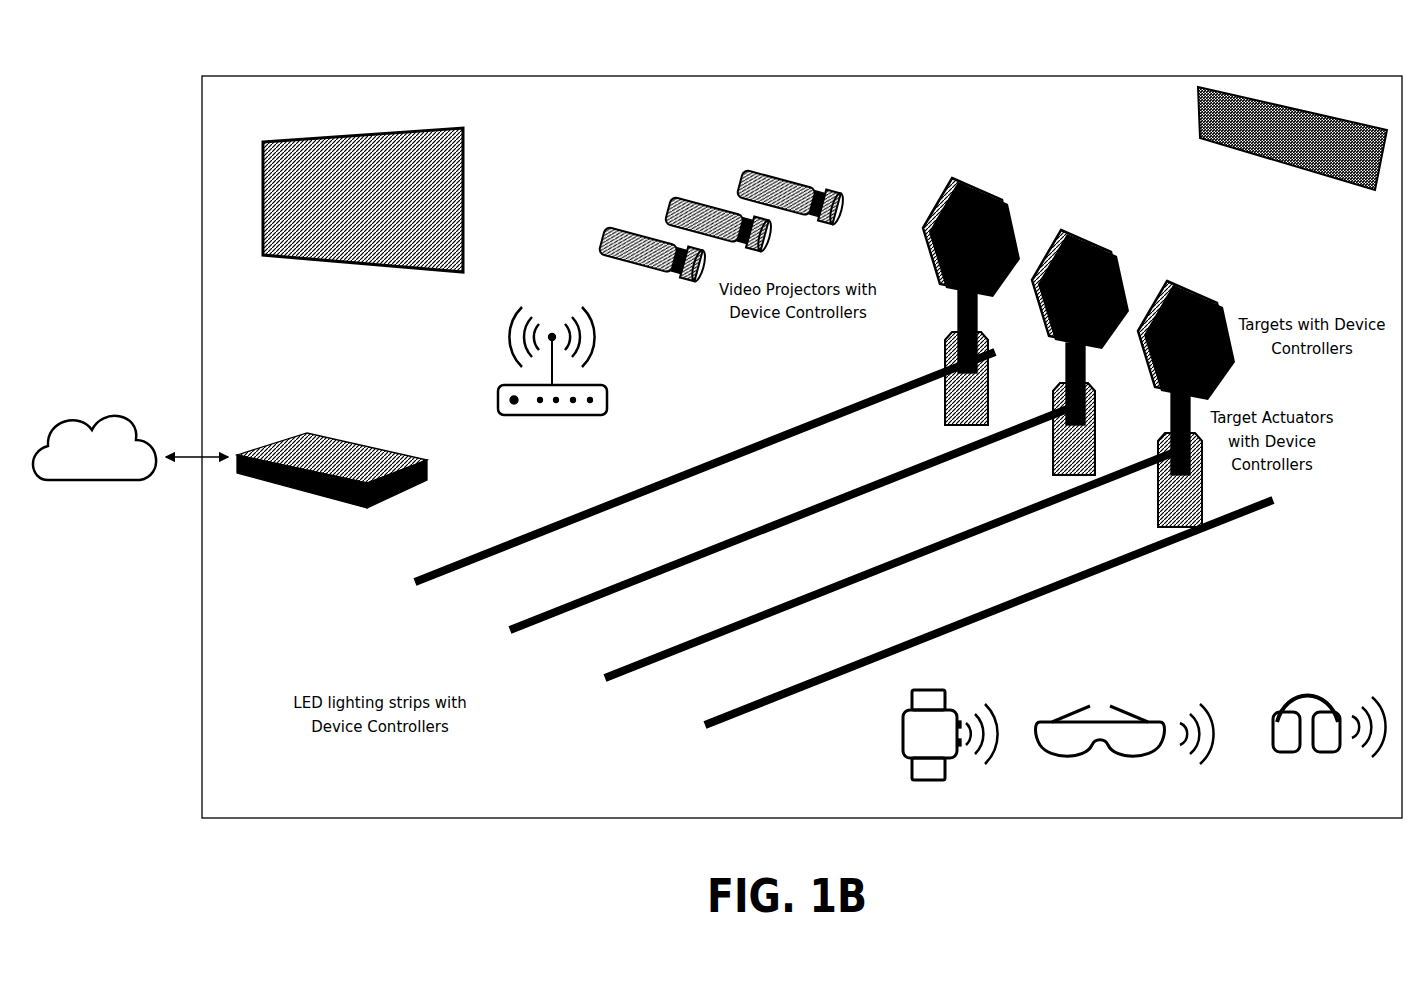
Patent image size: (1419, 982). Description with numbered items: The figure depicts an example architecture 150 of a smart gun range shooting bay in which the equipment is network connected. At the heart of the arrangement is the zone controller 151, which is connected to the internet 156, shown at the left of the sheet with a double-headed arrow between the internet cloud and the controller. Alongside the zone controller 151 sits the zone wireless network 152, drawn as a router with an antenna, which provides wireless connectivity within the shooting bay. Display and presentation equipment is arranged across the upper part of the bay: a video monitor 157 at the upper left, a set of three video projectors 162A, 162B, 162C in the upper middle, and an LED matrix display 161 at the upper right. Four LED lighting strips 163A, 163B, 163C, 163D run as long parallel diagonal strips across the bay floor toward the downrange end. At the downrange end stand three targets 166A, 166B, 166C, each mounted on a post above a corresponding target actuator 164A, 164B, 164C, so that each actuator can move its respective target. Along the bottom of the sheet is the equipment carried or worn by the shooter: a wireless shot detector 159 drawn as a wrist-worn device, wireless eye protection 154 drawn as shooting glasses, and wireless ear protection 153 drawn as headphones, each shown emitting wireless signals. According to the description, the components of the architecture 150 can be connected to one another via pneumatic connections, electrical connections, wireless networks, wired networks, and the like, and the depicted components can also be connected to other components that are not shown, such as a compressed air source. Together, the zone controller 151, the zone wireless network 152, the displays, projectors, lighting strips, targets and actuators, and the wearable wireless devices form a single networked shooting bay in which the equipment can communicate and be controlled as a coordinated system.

The architecture 150 is at (176, 42).
The zone controller 151 is at (332, 453).
The zone wireless network 152 is at (547, 375).
The wireless ear protection 153 is at (1321, 700).
The wireless eye protection 154 is at (1125, 708).
The internet 156 is at (85, 474).
The video monitor 157 is at (363, 214).
The wireless shot detector 159 is at (892, 751).
The LED matrix display 161 is at (1191, 153).
The video projector 162A is at (615, 235).
The video projector 162B is at (681, 205).
The video projector 162C is at (752, 178).
The LED lighting strip 163A is at (677, 482).
The LED lighting strip 163B is at (766, 534).
The LED lighting strip 163C is at (867, 581).
The LED lighting strip 163D is at (961, 631).
The target actuator 164A is at (940, 364).
The target actuator 164B is at (1043, 411).
The target actuator 164C is at (1151, 461).
The target 166A is at (989, 231).
The target 166B is at (1092, 278).
The target 166C is at (1200, 328).